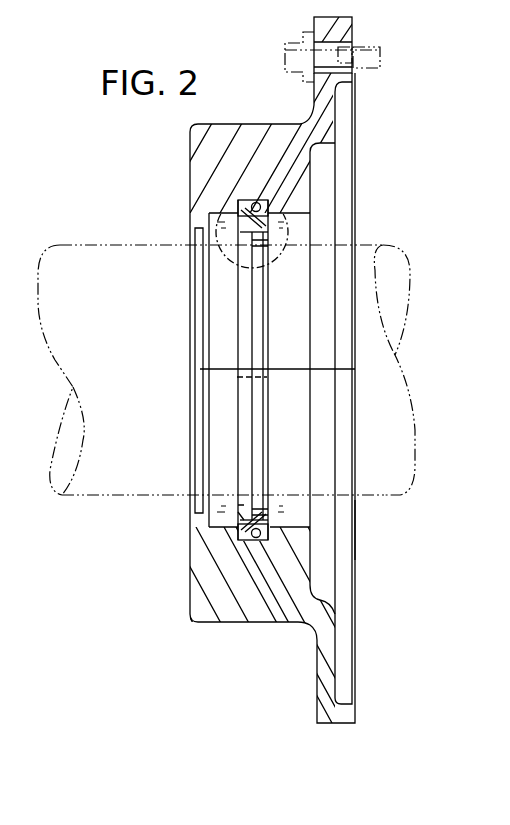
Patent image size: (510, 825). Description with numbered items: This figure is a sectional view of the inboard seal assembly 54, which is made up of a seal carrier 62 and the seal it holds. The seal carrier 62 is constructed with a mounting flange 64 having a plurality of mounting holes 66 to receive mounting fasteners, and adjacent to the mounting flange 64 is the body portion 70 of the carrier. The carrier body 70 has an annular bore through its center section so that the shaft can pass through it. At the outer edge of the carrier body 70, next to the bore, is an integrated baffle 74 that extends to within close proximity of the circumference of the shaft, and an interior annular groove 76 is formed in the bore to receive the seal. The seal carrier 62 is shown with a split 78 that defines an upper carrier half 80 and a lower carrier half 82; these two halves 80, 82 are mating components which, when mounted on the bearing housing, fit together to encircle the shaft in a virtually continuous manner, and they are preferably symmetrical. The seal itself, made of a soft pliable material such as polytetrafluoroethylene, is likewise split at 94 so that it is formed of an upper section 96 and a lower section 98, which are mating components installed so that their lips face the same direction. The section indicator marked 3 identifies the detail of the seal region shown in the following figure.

The inboard seal assembly 54 is at (184, 616).
The seal carrier 62 is at (190, 181).
The mounting flange 64 is at (353, 33).
The mounting holes 66 is at (352, 84).
The body portion 70 is at (265, 123).
The integrated baffle 74 is at (190, 497).
The interior annular groove 76 is at (270, 539).
The split 78 is at (343, 372).
The upper carrier half 80 is at (355, 204).
The lower carrier half 82 is at (357, 530).
The seal split 94 is at (250, 365).
The upper section 96 is at (237, 302).
The lower section 98 is at (240, 517).
The section line 3- 3 is at (214, 216).